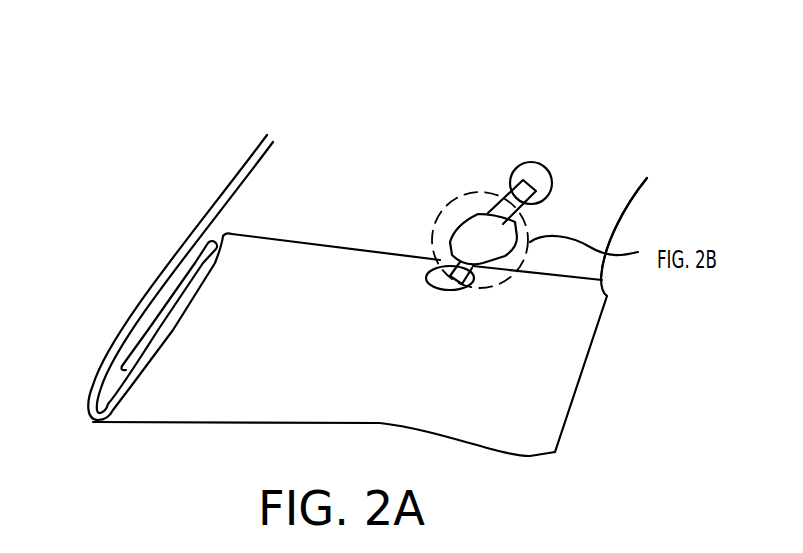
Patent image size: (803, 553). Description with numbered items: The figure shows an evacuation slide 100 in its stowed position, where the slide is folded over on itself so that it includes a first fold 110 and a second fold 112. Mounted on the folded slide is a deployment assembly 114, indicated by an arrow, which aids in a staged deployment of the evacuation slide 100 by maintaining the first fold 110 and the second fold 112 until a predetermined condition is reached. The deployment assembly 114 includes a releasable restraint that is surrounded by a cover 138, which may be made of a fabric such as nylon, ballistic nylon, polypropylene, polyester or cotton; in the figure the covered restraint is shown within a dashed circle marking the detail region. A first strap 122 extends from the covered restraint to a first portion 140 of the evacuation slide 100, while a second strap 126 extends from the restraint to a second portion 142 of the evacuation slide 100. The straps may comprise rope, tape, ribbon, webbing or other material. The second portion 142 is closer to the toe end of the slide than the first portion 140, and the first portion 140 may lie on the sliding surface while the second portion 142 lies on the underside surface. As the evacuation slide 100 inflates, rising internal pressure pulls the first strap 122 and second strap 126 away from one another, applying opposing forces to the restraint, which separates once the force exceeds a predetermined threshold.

The evacuation slide 100 is at (160, 96).
The first fold 110 is at (93, 422).
The second fold 112 is at (223, 233).
The deployment assembly 114 is at (588, 184).
The first strap 122 is at (511, 196).
The second strap 126 is at (465, 276).
The cover 138 is at (477, 240).
The first portion 140 is at (537, 162).
The second portion 142 is at (438, 268).